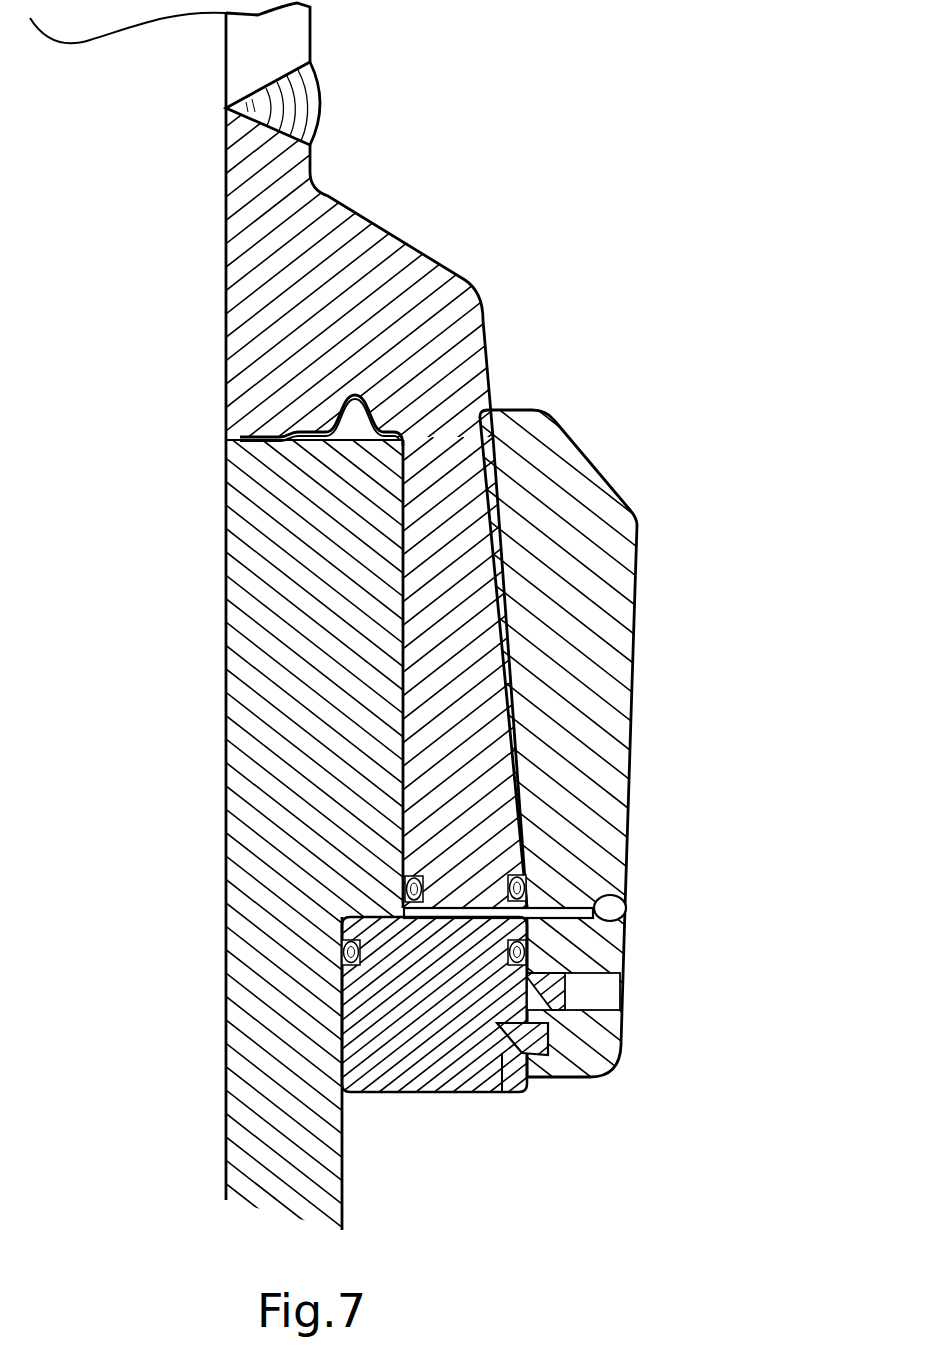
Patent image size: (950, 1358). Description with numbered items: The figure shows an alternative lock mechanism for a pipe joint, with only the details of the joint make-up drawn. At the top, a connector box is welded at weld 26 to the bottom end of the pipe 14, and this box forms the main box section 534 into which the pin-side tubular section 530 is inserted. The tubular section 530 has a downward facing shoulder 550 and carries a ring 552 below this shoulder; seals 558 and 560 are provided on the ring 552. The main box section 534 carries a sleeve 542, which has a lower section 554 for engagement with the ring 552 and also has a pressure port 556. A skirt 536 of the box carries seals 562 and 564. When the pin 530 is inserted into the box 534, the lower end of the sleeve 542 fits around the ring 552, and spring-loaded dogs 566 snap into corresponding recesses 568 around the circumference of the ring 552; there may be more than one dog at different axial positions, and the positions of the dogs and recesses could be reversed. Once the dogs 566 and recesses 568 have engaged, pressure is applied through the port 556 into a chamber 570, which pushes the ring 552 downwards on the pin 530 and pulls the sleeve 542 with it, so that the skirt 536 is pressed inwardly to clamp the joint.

The pipe 14 is at (278, 42).
The weld 26 is at (297, 115).
The main box section 534 is at (258, 304).
The skirt 536 is at (463, 770).
The tubular section 530 is at (258, 530).
The sleeve 542 is at (605, 612).
The lower section 554 is at (600, 950).
The downward facing shoulder 550 is at (382, 916).
The pressure port 556 is at (618, 914).
The chamber 570 is at (467, 907).
The ring 552 is at (397, 1070).
The recesses 568 is at (497, 1080).
The spring-loaded dogs 566 is at (565, 993).
The seal 562 is at (408, 874).
The seal 564 is at (527, 880).
The seal 558 is at (340, 947).
The seal 560 is at (508, 955).